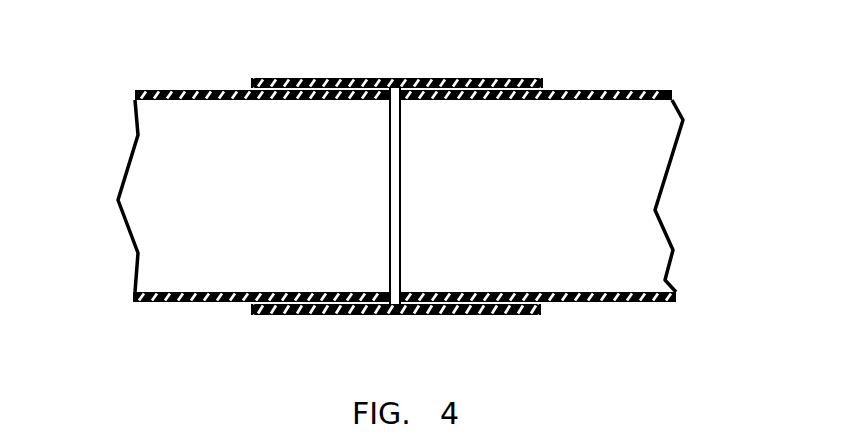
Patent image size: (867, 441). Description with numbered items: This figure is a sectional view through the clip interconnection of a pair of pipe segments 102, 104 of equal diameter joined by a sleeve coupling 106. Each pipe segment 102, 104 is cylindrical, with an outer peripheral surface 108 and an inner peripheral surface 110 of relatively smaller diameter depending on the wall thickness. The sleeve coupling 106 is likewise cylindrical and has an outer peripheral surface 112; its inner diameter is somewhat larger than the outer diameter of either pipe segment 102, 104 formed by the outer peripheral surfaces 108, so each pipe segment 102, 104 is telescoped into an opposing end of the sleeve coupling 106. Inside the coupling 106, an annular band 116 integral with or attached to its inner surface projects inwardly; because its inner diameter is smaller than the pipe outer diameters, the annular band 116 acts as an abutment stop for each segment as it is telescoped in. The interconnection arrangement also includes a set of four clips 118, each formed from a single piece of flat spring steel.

The pipe segment 102 is at (166, 72).
The pipe segment 104 is at (650, 68).
The sleeve coupling 106 is at (424, 52).
The outer peripheral surface 108 is at (154, 315).
The inner peripheral surface 110 is at (265, 197).
The outer peripheral surface 112 is at (313, 68).
The annular band 116 is at (393, 262).
The clip 118 is at (253, 79).